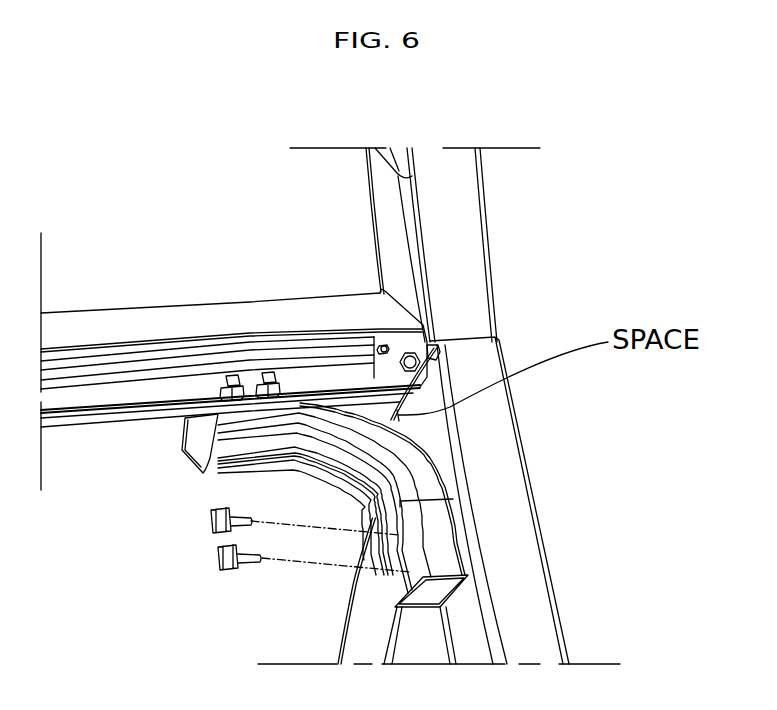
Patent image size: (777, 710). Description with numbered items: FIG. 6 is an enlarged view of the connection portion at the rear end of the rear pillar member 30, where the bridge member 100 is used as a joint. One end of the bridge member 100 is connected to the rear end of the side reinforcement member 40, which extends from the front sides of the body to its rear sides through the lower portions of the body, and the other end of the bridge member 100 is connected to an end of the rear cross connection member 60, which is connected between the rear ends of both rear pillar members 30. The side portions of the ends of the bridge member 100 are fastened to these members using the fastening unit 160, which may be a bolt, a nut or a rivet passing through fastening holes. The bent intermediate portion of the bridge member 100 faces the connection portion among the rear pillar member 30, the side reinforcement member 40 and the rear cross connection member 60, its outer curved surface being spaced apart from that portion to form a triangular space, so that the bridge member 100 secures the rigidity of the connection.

The rear pillar member 30 is at (462, 228).
The side reinforcement member 40 is at (512, 505).
The rear cross connection member 60 is at (138, 327).
The bridge member 100 is at (425, 478).
The fastening unit 160 is at (268, 376).